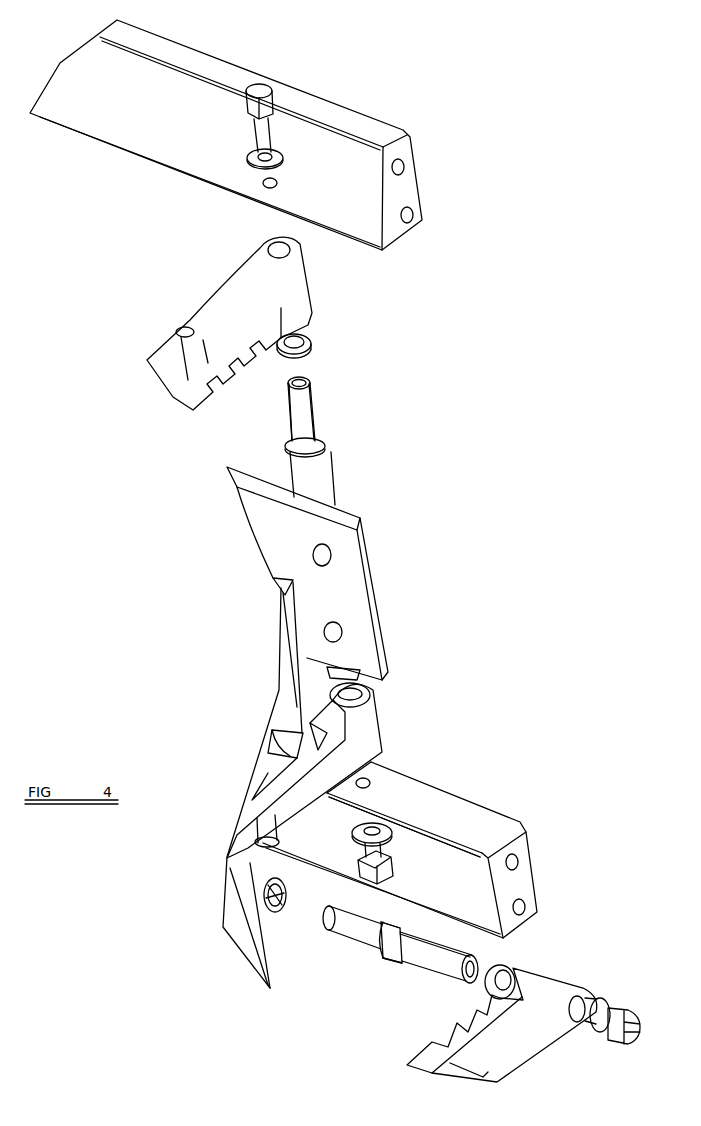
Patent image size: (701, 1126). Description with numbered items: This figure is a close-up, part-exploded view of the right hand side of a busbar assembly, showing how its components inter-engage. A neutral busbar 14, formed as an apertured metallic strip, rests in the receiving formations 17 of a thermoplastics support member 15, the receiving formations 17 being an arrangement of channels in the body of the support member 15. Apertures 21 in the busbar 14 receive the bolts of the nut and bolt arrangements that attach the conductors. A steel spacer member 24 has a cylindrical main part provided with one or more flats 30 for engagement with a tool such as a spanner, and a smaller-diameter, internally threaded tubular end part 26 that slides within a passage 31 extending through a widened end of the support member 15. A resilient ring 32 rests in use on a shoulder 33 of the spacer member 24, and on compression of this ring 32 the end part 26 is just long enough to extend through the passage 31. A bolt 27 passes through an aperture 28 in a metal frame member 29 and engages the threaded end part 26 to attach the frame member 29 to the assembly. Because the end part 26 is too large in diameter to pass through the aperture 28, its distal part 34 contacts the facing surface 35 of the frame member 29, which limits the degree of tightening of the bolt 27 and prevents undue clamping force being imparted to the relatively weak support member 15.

The neutral busbar 14 is at (367, 586).
The support member 15 is at (322, 293).
The receiving formation 17 is at (303, 742).
The aperture 21 is at (340, 638).
The spacer member 24 is at (281, 439).
The tubular end part 26 is at (311, 413).
The bolt 27 is at (256, 140).
The aperture 28 is at (266, 187).
The frame member 29 is at (345, 95).
The flat 30 is at (408, 922).
The passage 31 is at (290, 248).
The resilient ring 32 is at (312, 338).
The shoulder 33 is at (323, 438).
The distal part 34 is at (308, 379).
The facing surface 35 is at (404, 803).